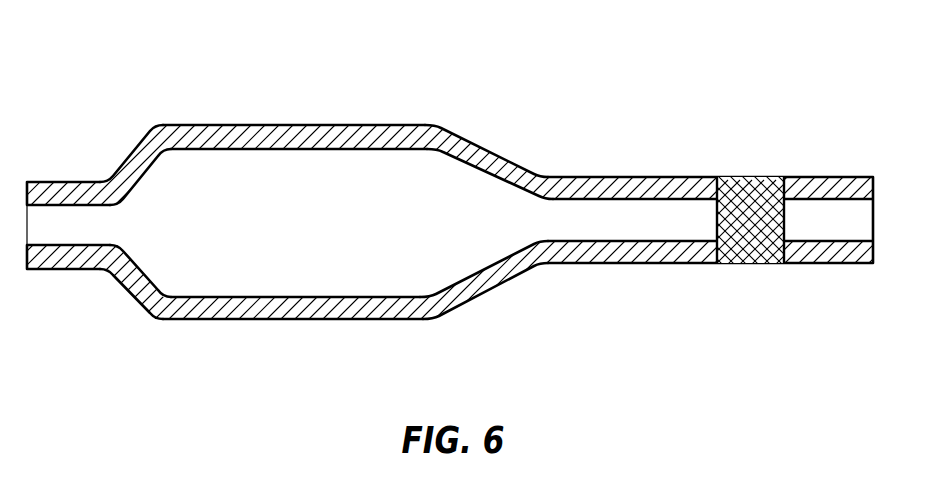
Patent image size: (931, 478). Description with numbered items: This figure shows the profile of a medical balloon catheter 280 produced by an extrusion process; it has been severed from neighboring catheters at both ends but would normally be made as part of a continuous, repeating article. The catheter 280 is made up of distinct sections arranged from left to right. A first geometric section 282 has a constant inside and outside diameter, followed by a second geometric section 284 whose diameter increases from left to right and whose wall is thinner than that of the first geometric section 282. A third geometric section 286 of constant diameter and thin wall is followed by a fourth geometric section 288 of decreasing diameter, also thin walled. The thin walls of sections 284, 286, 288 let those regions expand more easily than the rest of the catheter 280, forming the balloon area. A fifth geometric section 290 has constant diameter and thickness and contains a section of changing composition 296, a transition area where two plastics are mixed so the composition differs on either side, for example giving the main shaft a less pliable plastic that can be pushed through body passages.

The medical balloon catheter 280 is at (500, 310).
The first geometric section 282 is at (102, 80).
The second geometric section 284 is at (105, 80).
The third geometric section 286 is at (435, 78).
The fourth geometric section 288 is at (548, 78).
The fifth geometric section 290 is at (870, 76).
The section of changing composition 296 is at (717, 275).